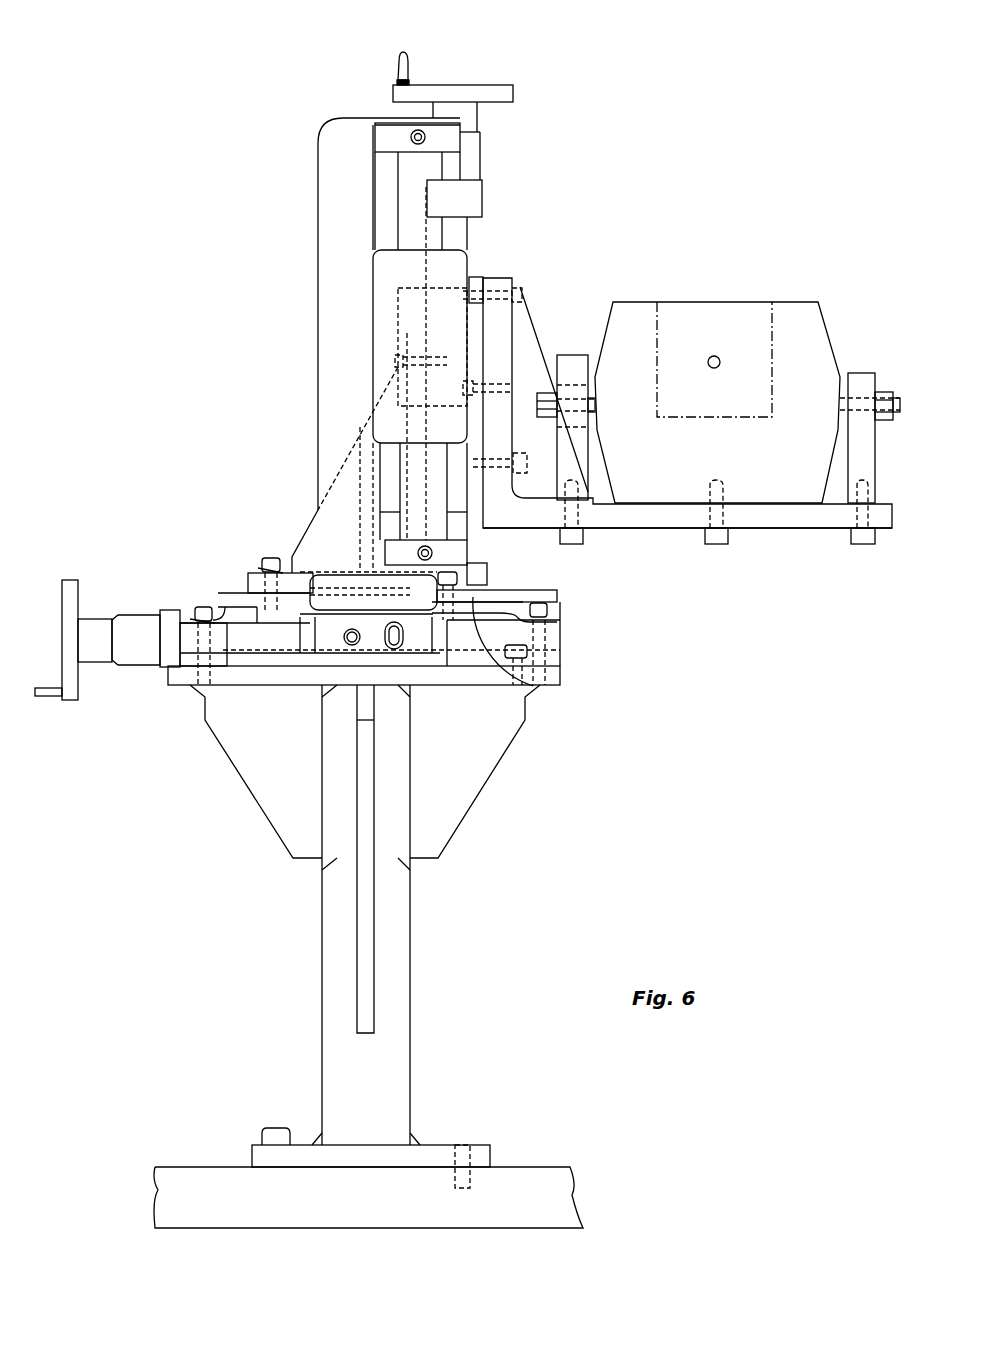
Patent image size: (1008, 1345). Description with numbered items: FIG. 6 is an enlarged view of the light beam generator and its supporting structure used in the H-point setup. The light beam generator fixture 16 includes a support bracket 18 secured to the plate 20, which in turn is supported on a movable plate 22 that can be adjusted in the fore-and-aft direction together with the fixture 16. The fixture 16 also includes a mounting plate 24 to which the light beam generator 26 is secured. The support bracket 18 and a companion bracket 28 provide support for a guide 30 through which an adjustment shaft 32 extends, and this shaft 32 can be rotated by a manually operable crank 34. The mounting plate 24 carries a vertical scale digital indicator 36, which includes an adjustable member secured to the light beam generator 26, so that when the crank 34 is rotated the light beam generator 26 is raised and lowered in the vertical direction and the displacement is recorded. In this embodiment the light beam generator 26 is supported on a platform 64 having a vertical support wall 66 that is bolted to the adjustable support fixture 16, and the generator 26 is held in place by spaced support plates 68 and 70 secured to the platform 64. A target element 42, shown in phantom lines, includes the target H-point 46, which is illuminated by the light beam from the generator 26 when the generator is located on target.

The light beam generator fixture 16 is at (460, 493).
The support bracket 18 is at (293, 552).
The plate 20 is at (467, 592).
The movable plate 22 is at (517, 670).
The mounting plate 24 is at (433, 233).
The light beam generator 26 is at (630, 337).
The companion bracket 28 is at (397, 784).
The guide 30 is at (457, 195).
The adjustment shaft 32 is at (470, 108).
The crank 34 is at (397, 68).
The vertical scale digital indicator 36 is at (382, 260).
The target element 42 is at (722, 317).
The target H-point 46 is at (720, 362).
The platform 64 is at (662, 518).
The vertical support wall 66 is at (497, 330).
The support plate 68 is at (570, 368).
The support plate 70 is at (861, 383).